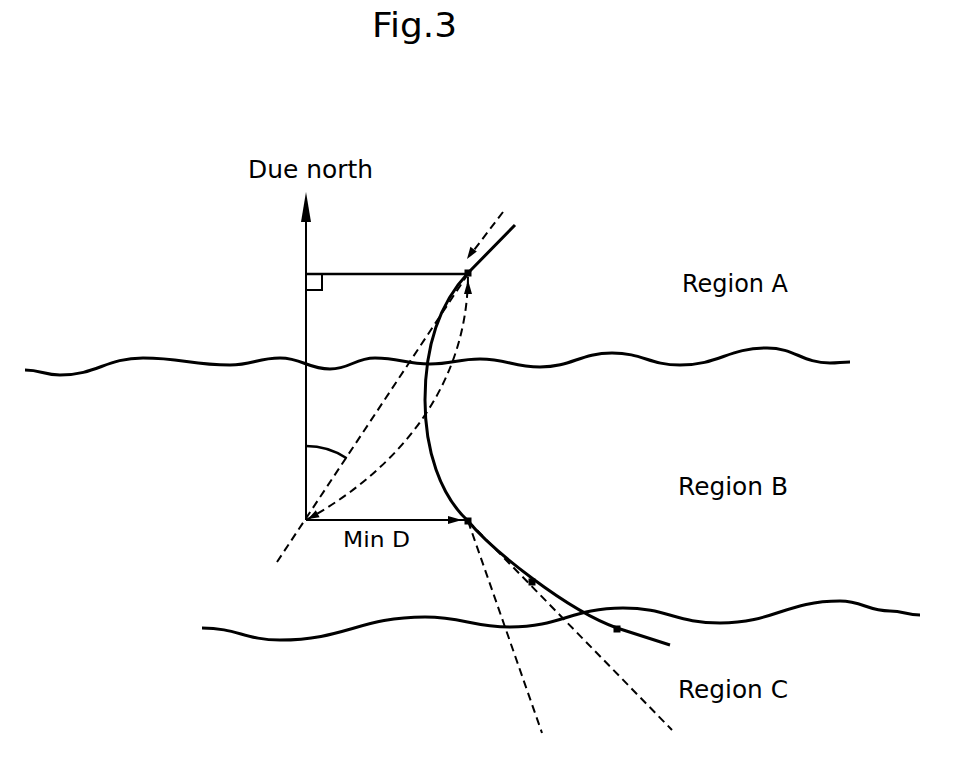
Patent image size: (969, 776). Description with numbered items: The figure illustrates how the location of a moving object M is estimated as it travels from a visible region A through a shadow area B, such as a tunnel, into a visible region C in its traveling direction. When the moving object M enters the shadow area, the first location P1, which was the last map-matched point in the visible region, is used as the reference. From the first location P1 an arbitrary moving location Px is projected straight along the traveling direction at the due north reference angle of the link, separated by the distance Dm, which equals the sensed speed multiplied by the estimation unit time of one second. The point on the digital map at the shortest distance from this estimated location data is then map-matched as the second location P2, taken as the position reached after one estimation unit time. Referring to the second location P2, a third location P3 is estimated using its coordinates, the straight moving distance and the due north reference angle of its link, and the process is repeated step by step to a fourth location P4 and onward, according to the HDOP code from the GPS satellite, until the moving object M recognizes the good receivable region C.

The first location P1 is at (404, 284).
The second location P2 is at (569, 617).
The third location P3 is at (548, 571).
The fourth location P4 is at (631, 617).
The arbitrary moving location Px is at (367, 518).
The moving object M is at (547, 420).
The distance Dm is at (394, 397).